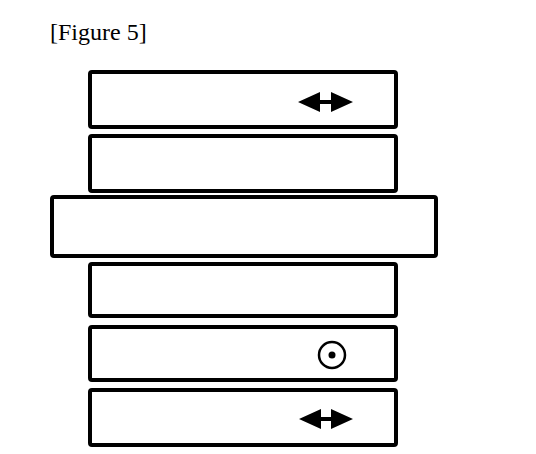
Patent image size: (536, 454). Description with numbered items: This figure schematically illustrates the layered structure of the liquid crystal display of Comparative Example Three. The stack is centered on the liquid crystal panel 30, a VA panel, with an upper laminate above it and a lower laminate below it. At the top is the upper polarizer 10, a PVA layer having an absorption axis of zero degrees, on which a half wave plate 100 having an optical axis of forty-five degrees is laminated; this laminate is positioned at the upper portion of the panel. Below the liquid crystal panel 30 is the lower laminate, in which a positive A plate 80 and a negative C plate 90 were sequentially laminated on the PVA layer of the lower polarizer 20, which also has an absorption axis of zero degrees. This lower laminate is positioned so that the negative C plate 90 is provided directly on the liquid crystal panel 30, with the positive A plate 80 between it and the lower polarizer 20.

The upper polarizer 10 is at (243, 99).
The half wave plate 100 is at (243, 163).
The liquid crystal panel 30 is at (244, 226).
The negative C plate 90 is at (243, 290).
The positive A plate 80 is at (243, 353).
The lower polarizer 20 is at (243, 417).